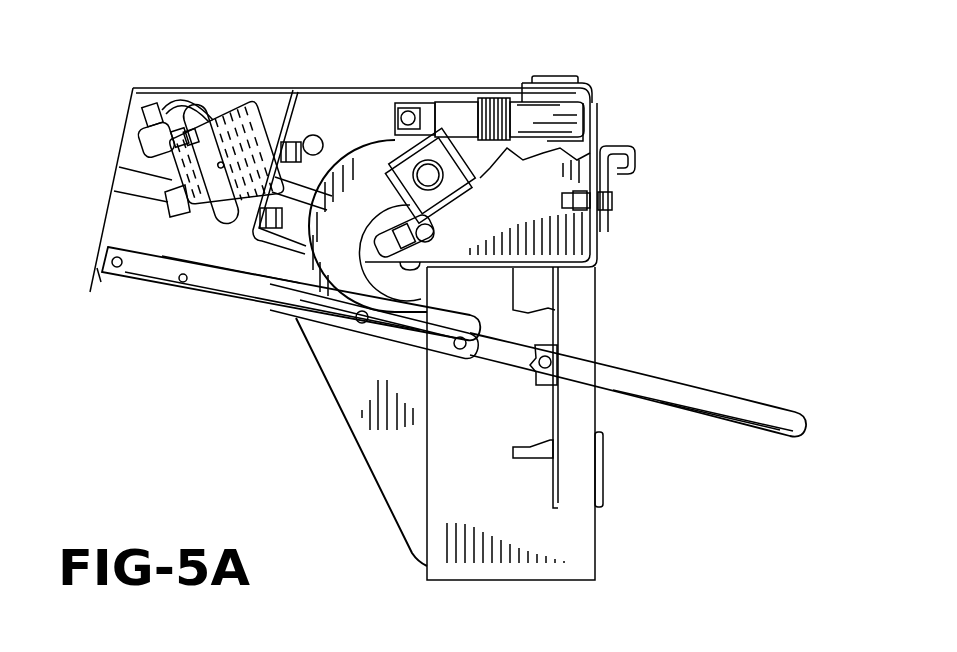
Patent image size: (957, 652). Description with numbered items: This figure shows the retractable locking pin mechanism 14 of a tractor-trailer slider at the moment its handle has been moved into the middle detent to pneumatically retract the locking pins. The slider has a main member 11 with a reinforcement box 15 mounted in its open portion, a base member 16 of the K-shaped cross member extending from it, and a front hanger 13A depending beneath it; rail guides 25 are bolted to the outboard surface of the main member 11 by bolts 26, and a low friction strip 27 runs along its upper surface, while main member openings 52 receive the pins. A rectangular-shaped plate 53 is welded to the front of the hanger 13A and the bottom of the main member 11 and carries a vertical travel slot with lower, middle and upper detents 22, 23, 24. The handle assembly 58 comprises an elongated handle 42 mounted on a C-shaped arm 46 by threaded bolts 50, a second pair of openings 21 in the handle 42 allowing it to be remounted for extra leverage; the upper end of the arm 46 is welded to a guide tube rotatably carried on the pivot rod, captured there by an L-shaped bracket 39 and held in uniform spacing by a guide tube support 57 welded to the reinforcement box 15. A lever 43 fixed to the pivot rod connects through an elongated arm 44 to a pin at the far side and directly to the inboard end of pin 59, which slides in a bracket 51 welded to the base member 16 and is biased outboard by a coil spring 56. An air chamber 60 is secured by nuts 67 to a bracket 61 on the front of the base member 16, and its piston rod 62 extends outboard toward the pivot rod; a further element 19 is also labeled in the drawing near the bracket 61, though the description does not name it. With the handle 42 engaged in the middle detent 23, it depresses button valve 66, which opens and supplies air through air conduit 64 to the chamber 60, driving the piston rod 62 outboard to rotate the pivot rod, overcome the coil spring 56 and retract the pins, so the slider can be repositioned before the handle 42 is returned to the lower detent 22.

The main member 11 is at (593, 254).
The front hanger 13A is at (565, 544).
The retractable locking pin mechanism 14 is at (112, 278).
The reinforcement box 15 is at (506, 202).
The base member 16 is at (140, 92).
The button 19 is at (323, 143).
The second pair of openings 21 is at (121, 267).
The lower detent 22 is at (555, 422).
The middle detent 23 is at (557, 353).
The upper detent 24 is at (555, 316).
The rail guide 25 is at (633, 164).
The bolt 26 is at (603, 202).
The low friction strip 27 is at (571, 82).
The L-shaped bracket 39 is at (472, 180).
The handle 42 is at (753, 413).
The lever 43 is at (397, 138).
The elongated arm 44 is at (130, 188).
The C-shaped arm 46 is at (440, 360).
The threaded bolts 50 is at (458, 349).
The bracket 51 is at (481, 100).
The main member openings 52 is at (585, 99).
The rectangular-shaped plate 53 is at (556, 495).
The coil spring 56 is at (498, 100).
The guide tube support 57 is at (480, 200).
The handle assembly 58 is at (665, 378).
The pin 59 is at (594, 130).
The air chamber 60 is at (229, 108).
The bracket 61 is at (290, 126).
The piston rod 62 is at (282, 235).
The air conduit 64 is at (166, 104).
The button valve 66 is at (546, 370).
The nuts 67 is at (292, 148).